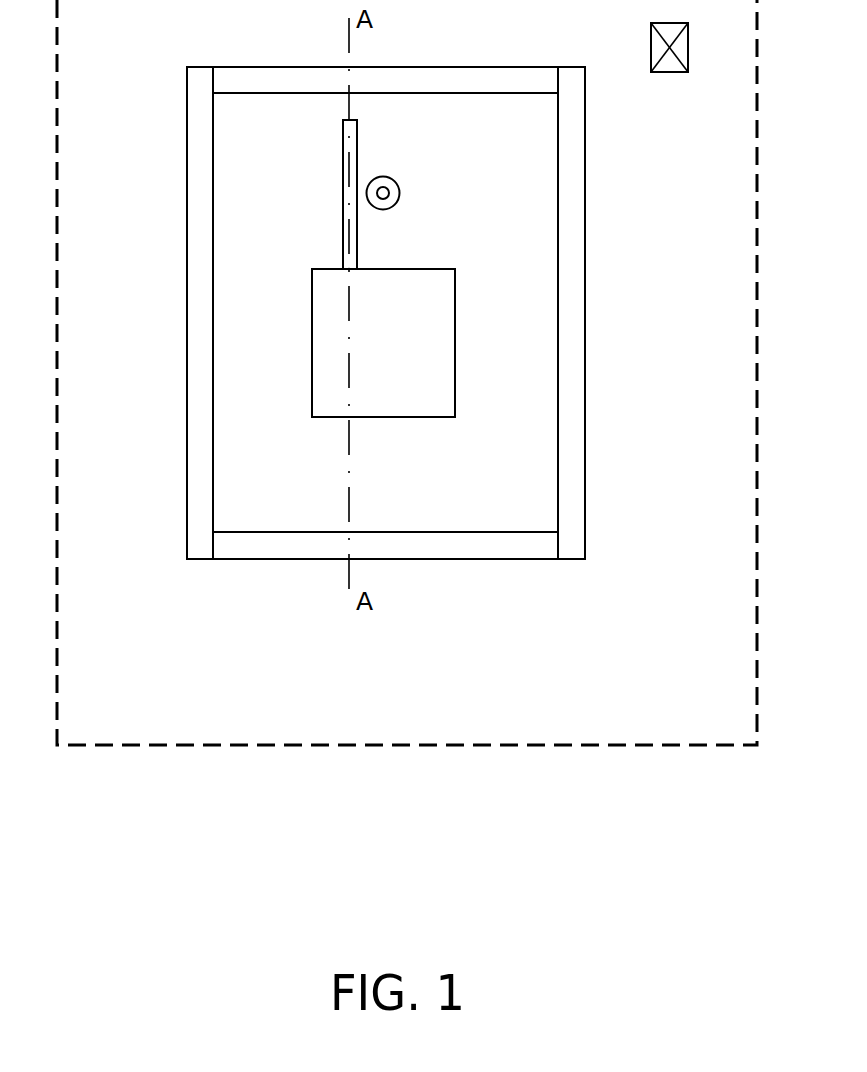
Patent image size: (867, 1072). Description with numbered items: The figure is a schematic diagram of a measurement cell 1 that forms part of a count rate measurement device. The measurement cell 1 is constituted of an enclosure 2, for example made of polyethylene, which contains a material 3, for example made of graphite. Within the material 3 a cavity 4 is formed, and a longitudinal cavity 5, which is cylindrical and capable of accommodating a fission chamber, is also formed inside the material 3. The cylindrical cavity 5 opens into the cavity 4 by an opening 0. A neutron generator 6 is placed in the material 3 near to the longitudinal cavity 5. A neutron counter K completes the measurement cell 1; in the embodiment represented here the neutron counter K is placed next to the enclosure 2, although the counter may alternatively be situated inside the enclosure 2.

The measurement cell 1 is at (639, 720).
The enclosure 2 is at (510, 547).
The material 3 is at (530, 287).
The cavity 4 is at (435, 355).
The longitudinal cavity 5 is at (349, 143).
The neutron generator 6 is at (383, 193).
The opening 0 is at (349, 271).
The neutron counter K is at (669, 65).